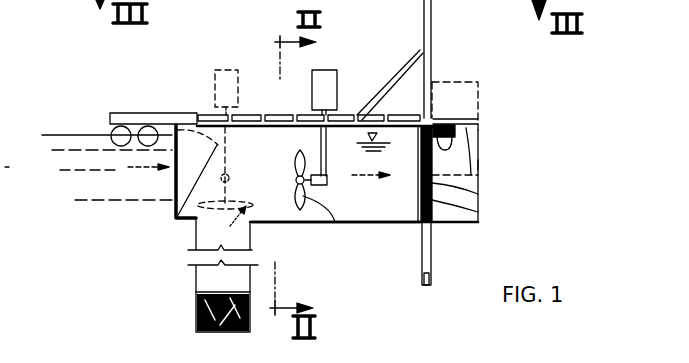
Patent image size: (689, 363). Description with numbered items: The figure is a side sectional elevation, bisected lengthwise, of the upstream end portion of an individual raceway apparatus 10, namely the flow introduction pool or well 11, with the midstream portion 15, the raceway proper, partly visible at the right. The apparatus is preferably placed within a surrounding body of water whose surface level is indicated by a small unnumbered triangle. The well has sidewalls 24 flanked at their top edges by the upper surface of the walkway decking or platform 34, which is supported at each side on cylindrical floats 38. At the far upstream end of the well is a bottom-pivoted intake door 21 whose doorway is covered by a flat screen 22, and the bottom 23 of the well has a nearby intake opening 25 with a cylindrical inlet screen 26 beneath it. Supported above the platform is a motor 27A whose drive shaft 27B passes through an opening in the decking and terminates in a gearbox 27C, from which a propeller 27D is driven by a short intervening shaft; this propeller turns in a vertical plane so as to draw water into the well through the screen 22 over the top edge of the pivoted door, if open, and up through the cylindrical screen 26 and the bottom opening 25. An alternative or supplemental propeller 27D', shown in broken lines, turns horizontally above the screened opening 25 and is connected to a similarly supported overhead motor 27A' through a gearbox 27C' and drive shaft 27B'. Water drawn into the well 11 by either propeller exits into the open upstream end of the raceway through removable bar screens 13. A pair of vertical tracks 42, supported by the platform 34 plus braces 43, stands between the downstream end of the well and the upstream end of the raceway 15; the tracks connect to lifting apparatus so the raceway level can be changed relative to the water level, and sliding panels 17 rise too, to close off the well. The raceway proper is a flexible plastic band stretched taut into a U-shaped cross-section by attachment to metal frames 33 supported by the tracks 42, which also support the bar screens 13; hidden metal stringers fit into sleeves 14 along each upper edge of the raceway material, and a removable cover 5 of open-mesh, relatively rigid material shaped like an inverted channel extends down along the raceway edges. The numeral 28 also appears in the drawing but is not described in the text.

The removable cover 5 is at (452, 126).
The raceway apparatus 10 is at (507, 70).
The flow introduction well 11 is at (350, 232).
The removable bar screens 13 is at (479, 213).
The sleeves 14 is at (473, 136).
The midstream portion 15 is at (485, 165).
The sliding panels 17 is at (433, 253).
The intake door 21 is at (212, 146).
The flat screen 22 is at (172, 181).
The bottom 23 is at (372, 222).
The sidewalls 24 is at (246, 135).
The intake opening 25 is at (203, 229).
The cylindrical inlet screen 26 is at (197, 305).
The motor 27A is at (349, 89).
The overhead motor 27A' is at (196, 87).
The drive shaft 27B is at (355, 152).
The drive shaft 27B' is at (259, 166).
The gearbox 27C is at (343, 192).
The gearbox 27C' is at (258, 179).
The propeller 27D is at (312, 215).
The alternative propeller 27D' is at (262, 227).
The cross bar 28 is at (375, 118).
The metal frames 33 is at (479, 193).
The walkway decking or platform 34 is at (148, 117).
The cylindrical floats 38 is at (123, 134).
The vertical tracks 42 is at (433, 28).
The braces 43 is at (415, 58).